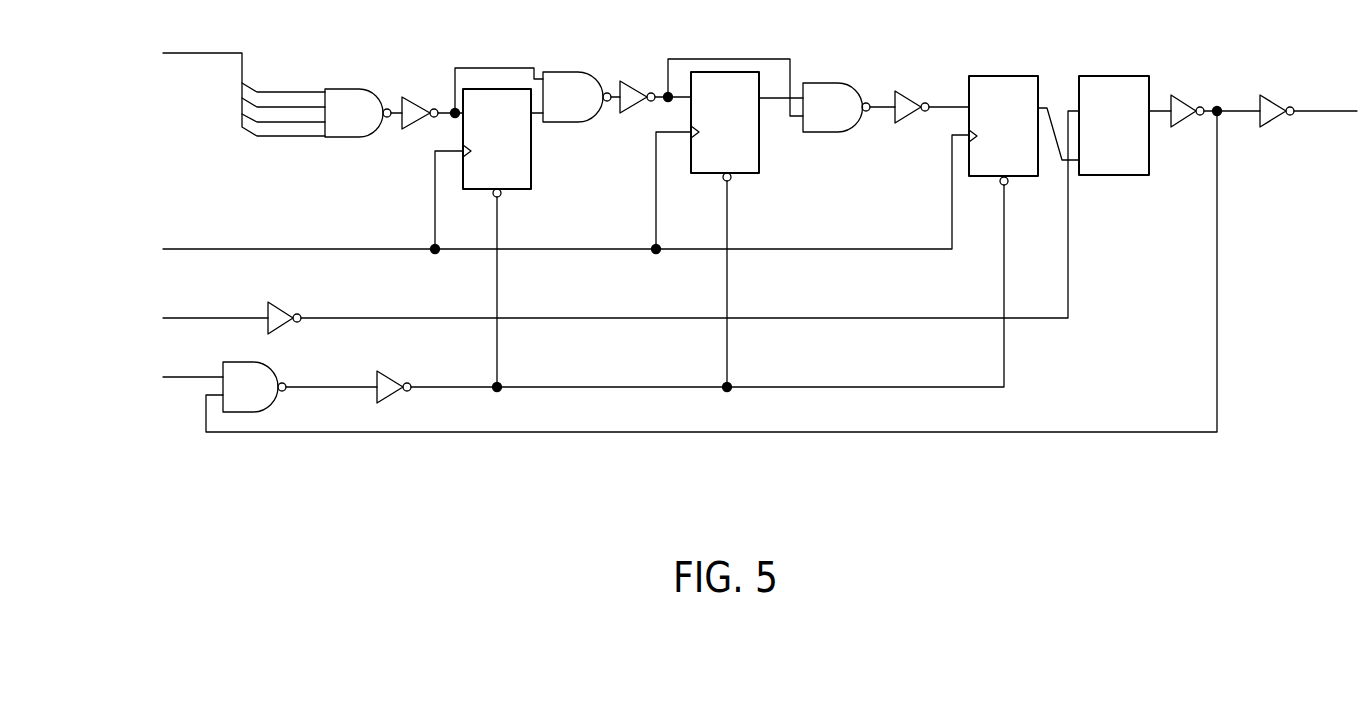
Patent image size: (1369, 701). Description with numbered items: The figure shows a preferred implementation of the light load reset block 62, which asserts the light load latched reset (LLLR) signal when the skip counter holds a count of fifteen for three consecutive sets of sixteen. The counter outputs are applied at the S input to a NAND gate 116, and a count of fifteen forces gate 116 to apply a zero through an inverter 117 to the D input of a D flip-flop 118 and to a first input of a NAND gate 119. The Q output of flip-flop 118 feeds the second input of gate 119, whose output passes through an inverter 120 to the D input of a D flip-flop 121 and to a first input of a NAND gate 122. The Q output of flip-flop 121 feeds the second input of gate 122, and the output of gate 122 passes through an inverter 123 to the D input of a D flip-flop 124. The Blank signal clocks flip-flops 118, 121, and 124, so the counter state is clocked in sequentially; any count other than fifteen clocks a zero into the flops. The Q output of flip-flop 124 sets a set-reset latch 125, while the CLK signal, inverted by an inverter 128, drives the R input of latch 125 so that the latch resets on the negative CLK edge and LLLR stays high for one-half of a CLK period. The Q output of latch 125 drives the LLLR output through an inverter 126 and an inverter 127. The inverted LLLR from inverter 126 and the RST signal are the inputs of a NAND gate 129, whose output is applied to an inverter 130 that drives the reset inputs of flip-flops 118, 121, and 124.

The light load reset block 62 is at (368, 503).
The NAND gate 116 is at (345, 88).
The inverter 117 is at (413, 97).
The D flip-flop 118 is at (488, 89).
The NAND gate 119 is at (563, 72).
The inverter 120 is at (630, 80).
The D flip-flop 121 is at (723, 72).
The NAND gate 122 is at (817, 83).
The inverter 123 is at (907, 92).
The D flip-flop 124 is at (982, 76).
The set-reset latch 125 is at (1103, 76).
The inverter 126 is at (1185, 95).
The inverter 127 is at (1277, 95).
The inverter 128 is at (281, 302).
The NAND gate 129 is at (278, 371).
The inverter 130 is at (392, 371).